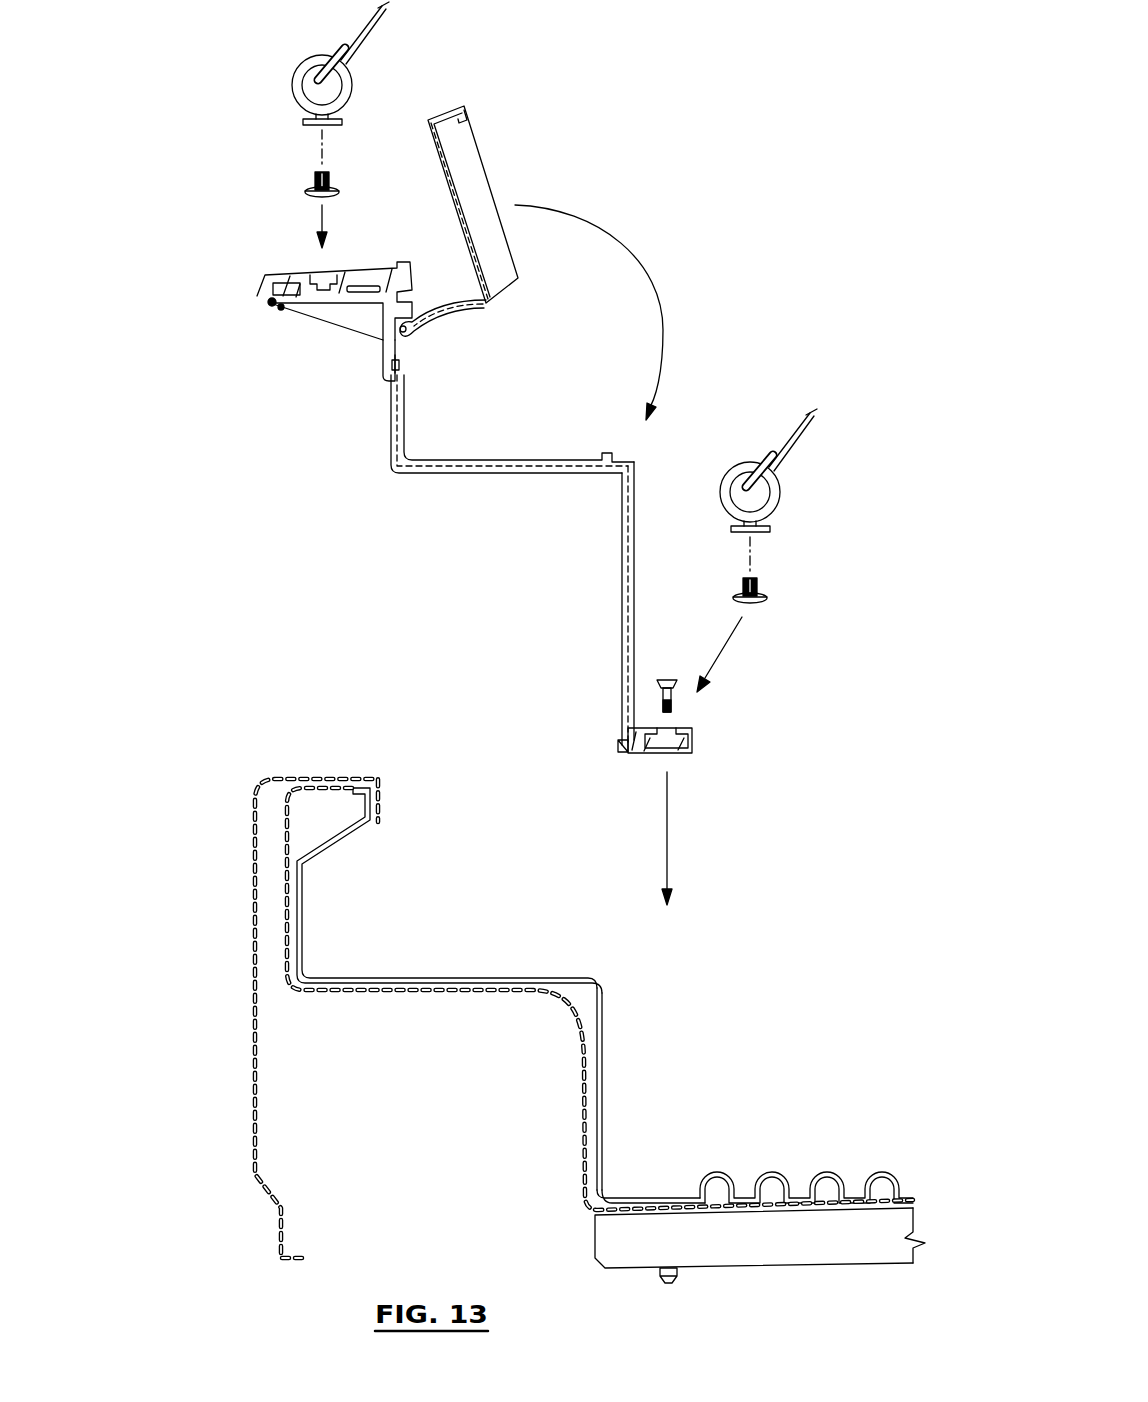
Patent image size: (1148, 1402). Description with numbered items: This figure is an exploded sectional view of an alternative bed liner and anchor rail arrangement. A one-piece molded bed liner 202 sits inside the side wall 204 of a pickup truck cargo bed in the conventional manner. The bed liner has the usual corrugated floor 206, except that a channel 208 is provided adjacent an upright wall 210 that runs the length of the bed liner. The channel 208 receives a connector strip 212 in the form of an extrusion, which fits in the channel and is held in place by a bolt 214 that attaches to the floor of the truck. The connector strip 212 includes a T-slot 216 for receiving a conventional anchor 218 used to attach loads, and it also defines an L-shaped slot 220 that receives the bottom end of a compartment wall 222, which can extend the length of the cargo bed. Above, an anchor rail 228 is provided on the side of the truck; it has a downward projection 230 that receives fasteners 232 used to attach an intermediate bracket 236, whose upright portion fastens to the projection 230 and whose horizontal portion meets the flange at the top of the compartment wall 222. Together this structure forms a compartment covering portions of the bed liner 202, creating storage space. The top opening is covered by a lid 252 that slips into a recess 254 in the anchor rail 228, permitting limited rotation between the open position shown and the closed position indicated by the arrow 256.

The bed liner 202 is at (609, 1033).
The side wall 204 is at (250, 1075).
The corrugated floor 206 is at (830, 1167).
The channel 208 is at (683, 1192).
The upright wall 210 is at (600, 1105).
The connector strip 212 is at (692, 743).
The bolt 214 is at (670, 679).
The T-slot 216 is at (660, 733).
The anchor 218 is at (782, 512).
The L-shaped slot 220 is at (637, 753).
The compartment wall 222 is at (625, 620).
The anchor rail 228 is at (299, 317).
The downward projection 230 is at (388, 345).
The fastener 232 is at (399, 363).
The intermediate bracket 236 is at (427, 475).
The lid 252 is at (477, 151).
The recess 254 is at (393, 328).
The arrow 256 is at (656, 295).